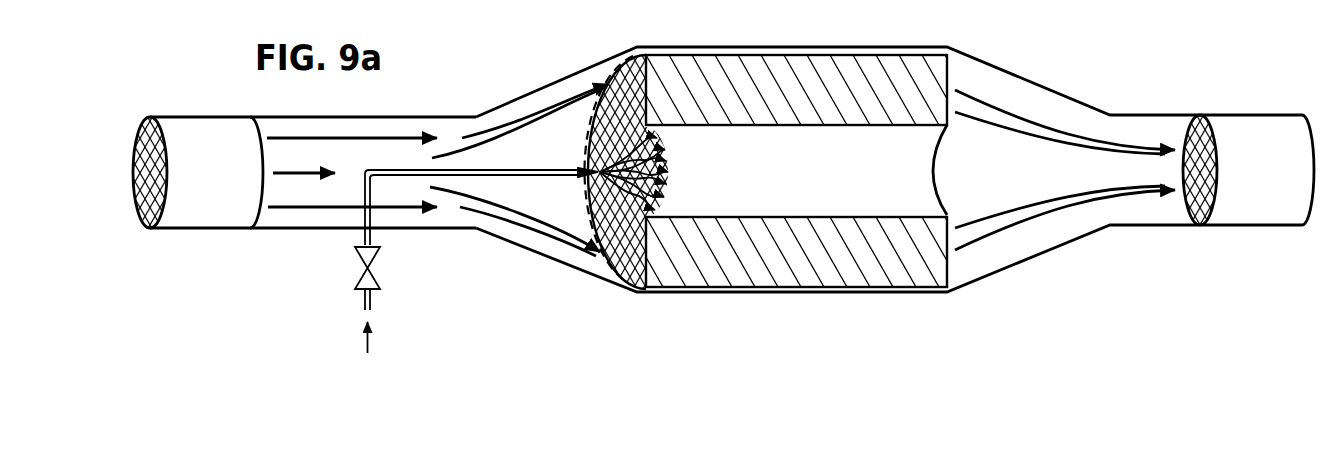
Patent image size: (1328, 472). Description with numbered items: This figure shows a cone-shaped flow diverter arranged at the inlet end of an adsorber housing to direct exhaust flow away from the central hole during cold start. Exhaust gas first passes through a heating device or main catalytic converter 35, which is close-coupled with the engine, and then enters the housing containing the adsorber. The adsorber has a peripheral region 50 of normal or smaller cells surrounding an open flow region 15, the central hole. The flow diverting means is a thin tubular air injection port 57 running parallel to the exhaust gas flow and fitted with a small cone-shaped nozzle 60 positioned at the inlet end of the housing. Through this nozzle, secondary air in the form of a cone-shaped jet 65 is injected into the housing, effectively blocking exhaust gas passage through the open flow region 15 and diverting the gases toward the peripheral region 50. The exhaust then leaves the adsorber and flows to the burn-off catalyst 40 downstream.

The heating device or main catalytic converter 35 is at (180, 128).
The open flow region 15 is at (928, 177).
The peripheral region having normal/smaller cells 50 is at (828, 110).
The cone-shaped nozzle 60 is at (584, 167).
The air injection port 57 is at (565, 179).
The cone-shaped jet 65 is at (680, 168).
The burn-off catalyst 40 is at (1228, 125).